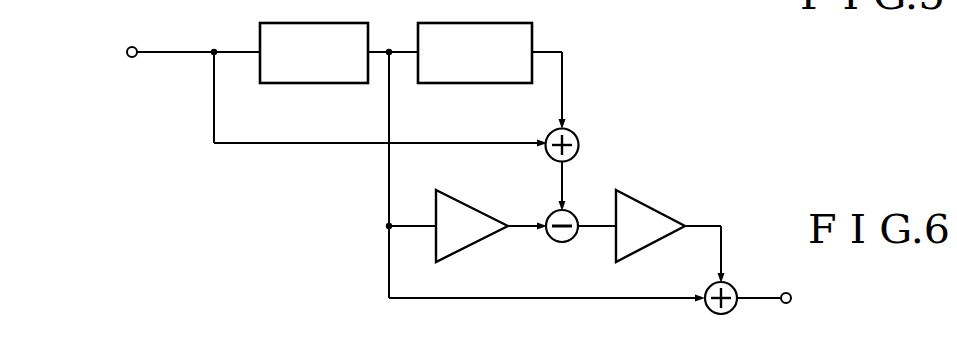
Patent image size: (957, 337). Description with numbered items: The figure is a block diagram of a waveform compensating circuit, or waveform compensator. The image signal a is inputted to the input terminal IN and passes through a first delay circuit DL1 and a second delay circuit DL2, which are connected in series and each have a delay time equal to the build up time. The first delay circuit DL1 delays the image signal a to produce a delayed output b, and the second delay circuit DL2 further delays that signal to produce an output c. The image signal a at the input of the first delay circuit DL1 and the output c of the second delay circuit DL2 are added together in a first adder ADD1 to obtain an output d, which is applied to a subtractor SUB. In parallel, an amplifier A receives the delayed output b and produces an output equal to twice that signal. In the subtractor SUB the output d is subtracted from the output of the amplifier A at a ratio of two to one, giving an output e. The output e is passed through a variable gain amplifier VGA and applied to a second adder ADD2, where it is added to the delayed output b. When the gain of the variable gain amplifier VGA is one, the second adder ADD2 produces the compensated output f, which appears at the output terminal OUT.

The input terminal IN is at (160, 53).
The image signal a is at (375, 85).
The first delay circuit DL1 is at (291, 41).
The delayed output b is at (536, 163).
The second delay circuit DL2 is at (475, 41).
The output of the second delay circuit c is at (553, 77).
The first adder ADD1 is at (583, 145).
The output of the first adder d is at (575, 187).
The amplifier A is at (491, 226).
The subtractor SUB is at (562, 243).
The output of the subtractor e is at (597, 241).
The variable gain amplifier VGA is at (670, 236).
The second adder ADD2 is at (702, 288).
The output of the second adder f is at (759, 283).
The output terminal OUT is at (804, 300).